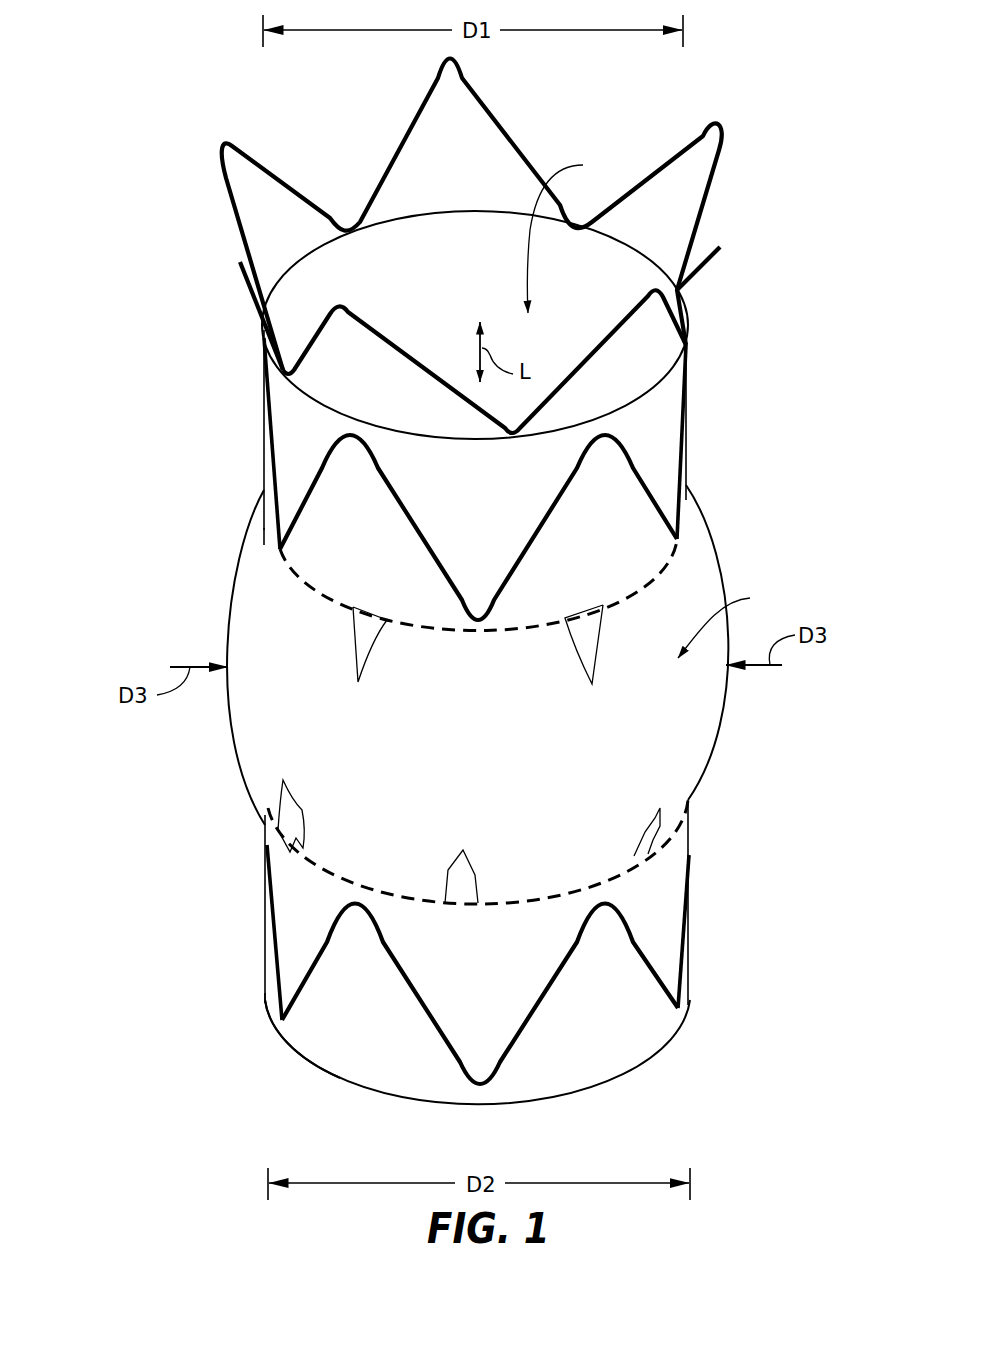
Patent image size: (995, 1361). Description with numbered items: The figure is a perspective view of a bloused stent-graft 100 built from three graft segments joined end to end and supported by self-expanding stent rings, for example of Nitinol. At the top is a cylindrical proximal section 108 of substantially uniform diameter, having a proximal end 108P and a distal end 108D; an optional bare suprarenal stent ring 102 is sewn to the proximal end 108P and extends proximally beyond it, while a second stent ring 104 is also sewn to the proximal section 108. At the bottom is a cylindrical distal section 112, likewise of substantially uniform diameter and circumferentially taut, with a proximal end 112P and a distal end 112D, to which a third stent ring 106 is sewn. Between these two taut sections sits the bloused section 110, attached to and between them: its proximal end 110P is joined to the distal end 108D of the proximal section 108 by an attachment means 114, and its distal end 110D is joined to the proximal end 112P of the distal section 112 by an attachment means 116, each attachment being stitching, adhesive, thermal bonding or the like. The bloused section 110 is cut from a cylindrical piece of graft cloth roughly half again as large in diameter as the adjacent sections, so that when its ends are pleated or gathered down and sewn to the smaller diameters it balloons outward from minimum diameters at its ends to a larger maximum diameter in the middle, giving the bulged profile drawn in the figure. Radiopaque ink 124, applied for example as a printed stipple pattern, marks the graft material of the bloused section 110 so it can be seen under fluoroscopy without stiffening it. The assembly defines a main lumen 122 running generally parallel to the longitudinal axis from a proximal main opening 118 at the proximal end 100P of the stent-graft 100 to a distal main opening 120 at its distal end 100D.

The bloused stent-graft 100 is at (148, 228).
The proximal end 100P is at (257, 329).
The distal end 100D is at (298, 1074).
The stent ring 102 is at (708, 208).
The stent ring 104 is at (632, 580).
The stent ring 106 is at (628, 917).
The proximal section 108 is at (287, 468).
The proximal end 108P is at (262, 338).
The distal end 108D is at (265, 545).
The bloused section 110 is at (243, 653).
The proximal end 110P is at (283, 548).
The distal end 110D is at (268, 814).
The distal section 112 is at (283, 883).
The proximal end 112P is at (292, 838).
The distal end 112D is at (265, 995).
The attachment means 114 is at (632, 580).
The attachment means 116 is at (597, 870).
The proximal main opening 118 is at (466, 300).
The distal main opening 120 is at (530, 1107).
The main lumen 122 is at (576, 233).
The radiopaque ink 124 is at (737, 621).